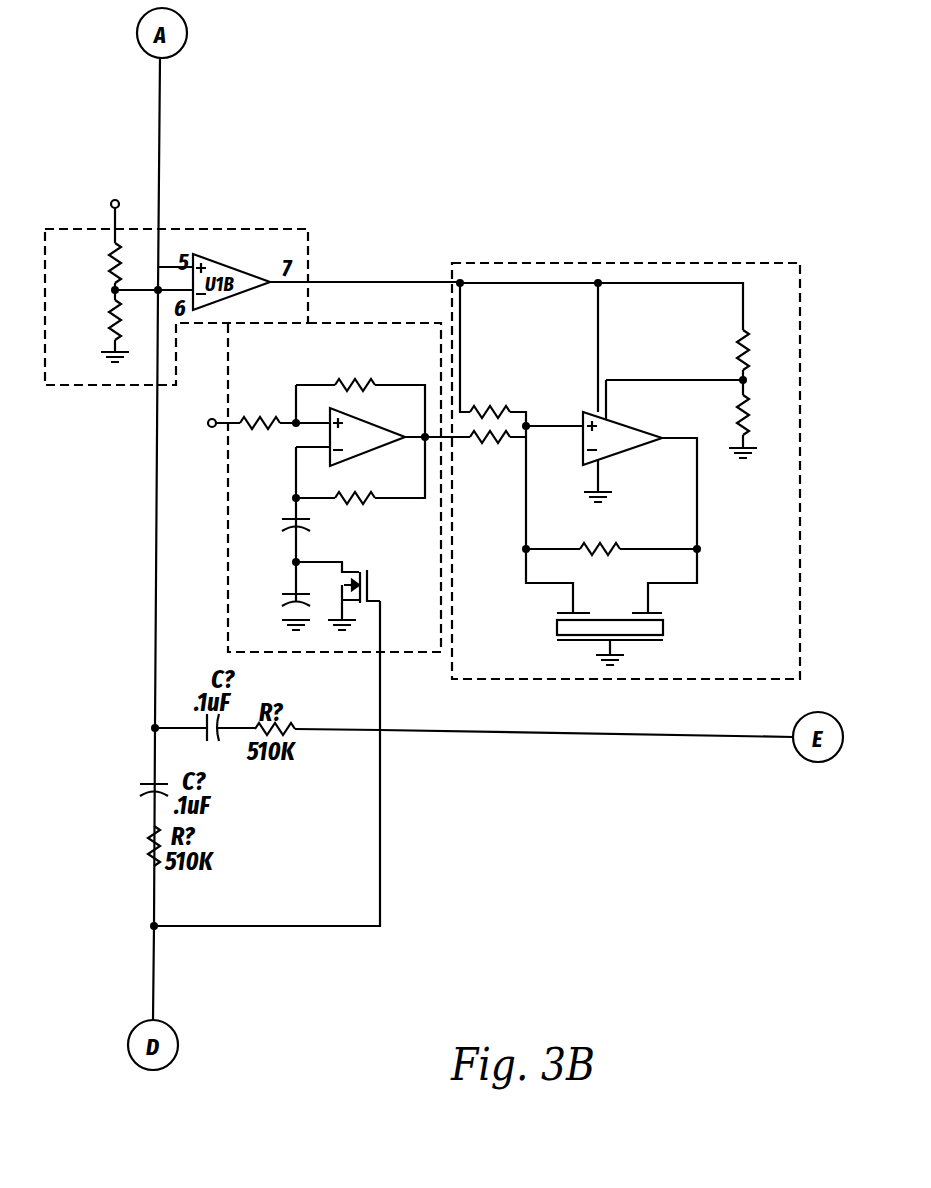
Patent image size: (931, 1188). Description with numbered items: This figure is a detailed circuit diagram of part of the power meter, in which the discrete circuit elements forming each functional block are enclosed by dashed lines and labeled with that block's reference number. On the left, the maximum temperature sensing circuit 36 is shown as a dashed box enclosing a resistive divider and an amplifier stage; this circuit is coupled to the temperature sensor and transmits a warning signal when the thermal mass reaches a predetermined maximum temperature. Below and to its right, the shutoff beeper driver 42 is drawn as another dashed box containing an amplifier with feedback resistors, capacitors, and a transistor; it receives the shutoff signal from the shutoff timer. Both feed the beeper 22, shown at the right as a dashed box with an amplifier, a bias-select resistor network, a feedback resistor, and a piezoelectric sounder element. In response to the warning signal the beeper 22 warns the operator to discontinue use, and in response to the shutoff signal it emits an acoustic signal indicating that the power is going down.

The maximum temperature sensing circuit 36 is at (137, 368).
The shutoff beeper driver 42 is at (400, 630).
The beeper 22 is at (785, 550).